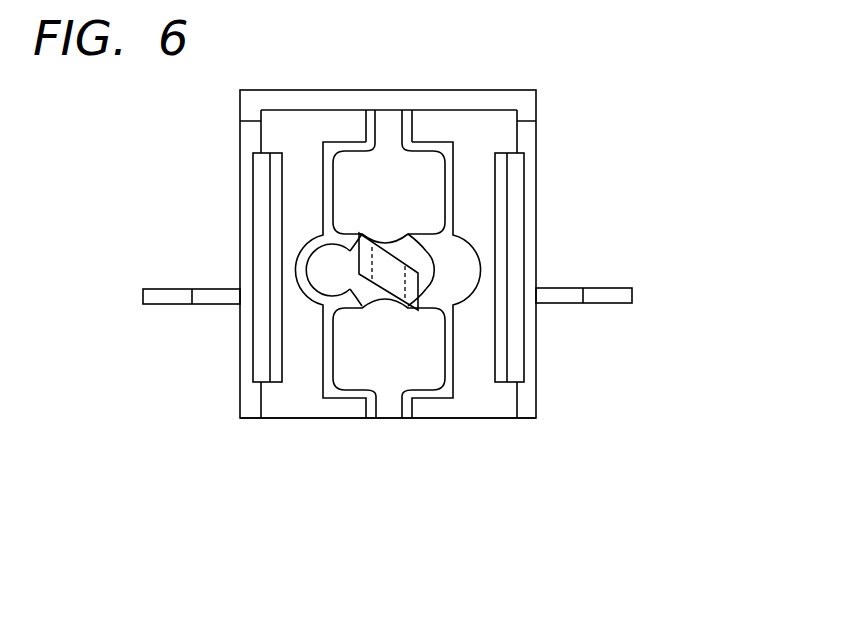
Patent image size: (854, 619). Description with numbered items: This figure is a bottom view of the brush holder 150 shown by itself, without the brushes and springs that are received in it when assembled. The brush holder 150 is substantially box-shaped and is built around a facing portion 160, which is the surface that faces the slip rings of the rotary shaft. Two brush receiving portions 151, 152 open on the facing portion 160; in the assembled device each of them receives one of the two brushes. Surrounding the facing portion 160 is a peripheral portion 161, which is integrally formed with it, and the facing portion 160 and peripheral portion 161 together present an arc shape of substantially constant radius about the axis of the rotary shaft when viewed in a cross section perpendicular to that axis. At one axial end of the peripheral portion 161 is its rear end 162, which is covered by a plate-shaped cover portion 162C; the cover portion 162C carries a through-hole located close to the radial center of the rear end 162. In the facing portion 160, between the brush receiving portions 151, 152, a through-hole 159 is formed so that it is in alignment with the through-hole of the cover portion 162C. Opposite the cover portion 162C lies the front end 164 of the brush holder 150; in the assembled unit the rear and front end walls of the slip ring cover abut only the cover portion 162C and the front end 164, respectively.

The brush holder 150 is at (566, 99).
The brush receiving portion 151 is at (410, 345).
The brush receiving portion 152 is at (410, 182).
The through-hole 159 is at (387, 268).
The facing portion 160 is at (306, 233).
The peripheral portion 161 is at (253, 133).
The rear end 162 is at (522, 116).
The cover portion 162C is at (340, 90).
The front end 164 is at (458, 420).